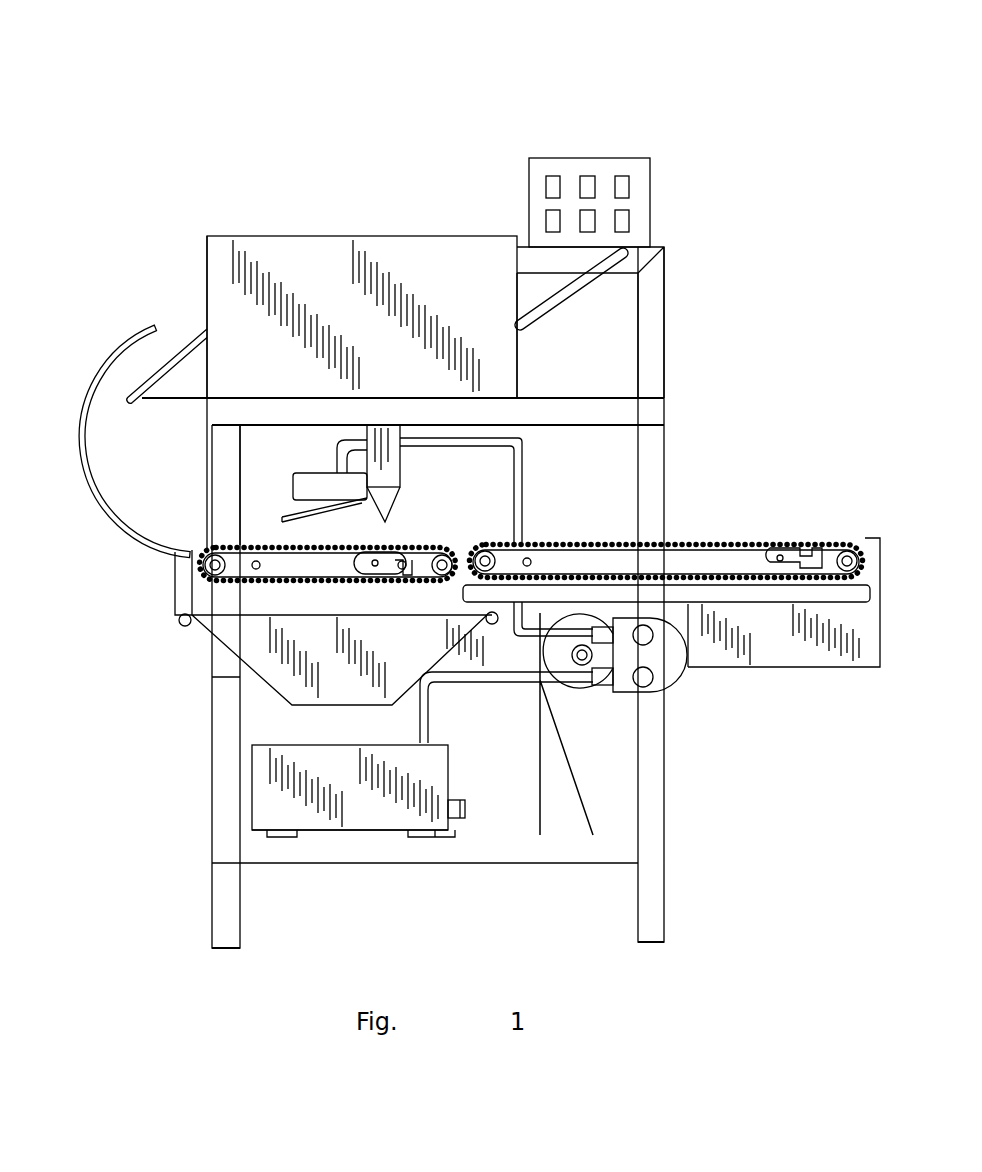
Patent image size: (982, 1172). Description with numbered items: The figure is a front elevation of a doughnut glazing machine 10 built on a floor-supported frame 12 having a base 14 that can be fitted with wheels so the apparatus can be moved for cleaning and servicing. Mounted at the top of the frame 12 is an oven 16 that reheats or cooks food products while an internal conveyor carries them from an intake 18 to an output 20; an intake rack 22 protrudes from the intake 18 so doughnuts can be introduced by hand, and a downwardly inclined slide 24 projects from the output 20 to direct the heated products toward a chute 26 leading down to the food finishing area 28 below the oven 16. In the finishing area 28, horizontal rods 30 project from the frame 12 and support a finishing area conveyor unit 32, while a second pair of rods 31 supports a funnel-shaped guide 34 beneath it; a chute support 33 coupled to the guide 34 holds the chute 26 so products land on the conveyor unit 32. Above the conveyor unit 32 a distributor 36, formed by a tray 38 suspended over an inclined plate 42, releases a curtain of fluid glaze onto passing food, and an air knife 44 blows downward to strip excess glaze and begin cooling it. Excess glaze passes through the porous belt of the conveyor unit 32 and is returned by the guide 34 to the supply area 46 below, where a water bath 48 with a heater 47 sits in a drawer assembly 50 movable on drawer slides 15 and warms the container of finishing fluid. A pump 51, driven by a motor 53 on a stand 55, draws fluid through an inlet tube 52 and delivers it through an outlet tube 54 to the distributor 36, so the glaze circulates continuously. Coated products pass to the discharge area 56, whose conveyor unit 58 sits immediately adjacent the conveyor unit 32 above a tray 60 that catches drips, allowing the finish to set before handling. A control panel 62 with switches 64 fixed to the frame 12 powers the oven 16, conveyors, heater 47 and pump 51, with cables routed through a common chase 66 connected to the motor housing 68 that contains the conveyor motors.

The doughnut glazing machine 10 is at (259, 83).
The frame 12 is at (657, 810).
The base 14 is at (658, 932).
The drawer slides 15 is at (283, 838).
The oven 16 is at (312, 244).
The intake 18 is at (540, 296).
The output 20 is at (196, 307).
The intake rack 22 is at (590, 280).
The downwardly inclined slide 24 is at (183, 376).
The chute 26 is at (100, 374).
The food finishing area 28 is at (250, 532).
The horizontal rods 30 is at (262, 565).
The second pair of rods 31 is at (178, 621).
The finishing area conveyor unit 32 is at (333, 582).
The chute support 33 is at (180, 588).
The funnel-shaped guide 34 is at (262, 652).
The distributor 36 is at (318, 480).
The tray 38 is at (298, 488).
The inclined plate 42 is at (306, 516).
The air knife 44 is at (402, 486).
The supply area 46 is at (185, 783).
The heater 47 is at (455, 836).
The water bath 48 is at (440, 787).
The drawer assembly 50 is at (265, 812).
The pump 51 is at (672, 675).
The inlet tube 52 is at (425, 728).
The motor 53 is at (582, 690).
The outlet tube 54 is at (333, 425).
The stand 55 is at (560, 840).
The discharge area 56 is at (698, 520).
The discharge area conveyor unit 58 is at (733, 553).
The tray 60 is at (768, 590).
The control panel 62 is at (548, 163).
The switches 64 is at (625, 172).
The common chase 66 is at (655, 355).
The motor housing 68 is at (790, 660).